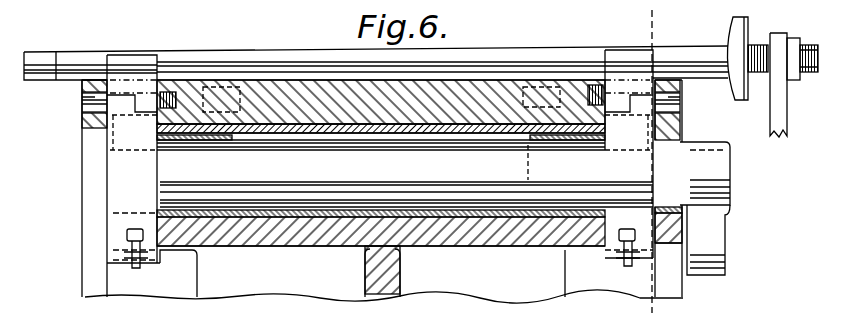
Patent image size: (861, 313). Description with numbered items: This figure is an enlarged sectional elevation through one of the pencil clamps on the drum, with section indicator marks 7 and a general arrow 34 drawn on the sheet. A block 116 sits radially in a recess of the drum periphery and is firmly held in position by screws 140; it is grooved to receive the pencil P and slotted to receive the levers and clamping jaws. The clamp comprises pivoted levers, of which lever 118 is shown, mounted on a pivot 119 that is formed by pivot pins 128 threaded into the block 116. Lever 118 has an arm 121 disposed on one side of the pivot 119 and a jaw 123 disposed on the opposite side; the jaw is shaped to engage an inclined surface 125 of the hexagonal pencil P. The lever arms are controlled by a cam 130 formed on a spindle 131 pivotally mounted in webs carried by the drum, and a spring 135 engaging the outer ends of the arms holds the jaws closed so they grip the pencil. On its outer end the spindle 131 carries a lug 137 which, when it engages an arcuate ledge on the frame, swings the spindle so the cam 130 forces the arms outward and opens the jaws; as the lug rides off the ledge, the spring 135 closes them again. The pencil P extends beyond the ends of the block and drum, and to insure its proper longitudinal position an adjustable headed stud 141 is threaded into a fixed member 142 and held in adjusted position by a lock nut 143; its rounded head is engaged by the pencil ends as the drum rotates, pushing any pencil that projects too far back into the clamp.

The pencil P is at (273, 55).
The inclined surface 125 is at (208, 57).
The jaw 123 is at (125, 62).
The frame assembly 34 is at (80, 192).
The pivot 119 is at (116, 116).
The pivot pin 128 is at (82, 96).
The cam 130 is at (143, 141).
The pivoted lever 118 is at (687, 167).
The lug 137 is at (716, 248).
The block 116 is at (455, 108).
The screw 140 is at (258, 143).
The spindle 131 is at (465, 178).
The lever arm 121 is at (118, 237).
The spring 135 is at (134, 264).
The section line 7- 7 is at (632, 309).
The adjustable headed stud 141 is at (756, 45).
The fixed member 142 is at (776, 112).
The lock nut 143 is at (795, 42).